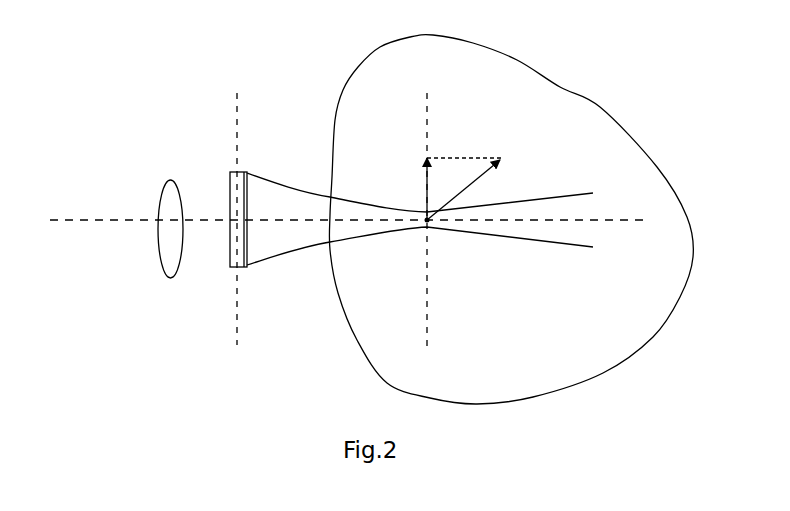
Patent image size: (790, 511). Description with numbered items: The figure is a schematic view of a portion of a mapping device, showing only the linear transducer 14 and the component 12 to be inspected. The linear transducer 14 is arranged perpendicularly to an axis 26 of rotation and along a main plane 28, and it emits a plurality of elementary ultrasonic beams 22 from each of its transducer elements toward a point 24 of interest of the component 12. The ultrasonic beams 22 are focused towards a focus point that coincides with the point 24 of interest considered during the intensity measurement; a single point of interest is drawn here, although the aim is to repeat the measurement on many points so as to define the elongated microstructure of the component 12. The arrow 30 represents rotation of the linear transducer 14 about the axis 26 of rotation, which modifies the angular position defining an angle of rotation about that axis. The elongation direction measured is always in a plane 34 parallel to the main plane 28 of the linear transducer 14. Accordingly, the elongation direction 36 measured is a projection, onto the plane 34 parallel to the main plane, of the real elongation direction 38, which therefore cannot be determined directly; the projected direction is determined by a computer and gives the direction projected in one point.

The component 12 is at (522, 60).
The linear transducer 14 is at (232, 250).
The elementary ultrasonic beams 22 is at (267, 177).
The point of interest 24 is at (437, 228).
The axis of rotation 26 is at (107, 217).
The main plane 28 is at (237, 132).
The arrow 30 is at (173, 177).
The plane parallel to the main plane 34 is at (423, 113).
The elongation direction measured 36 is at (420, 182).
The real elongation direction 38 is at (485, 182).